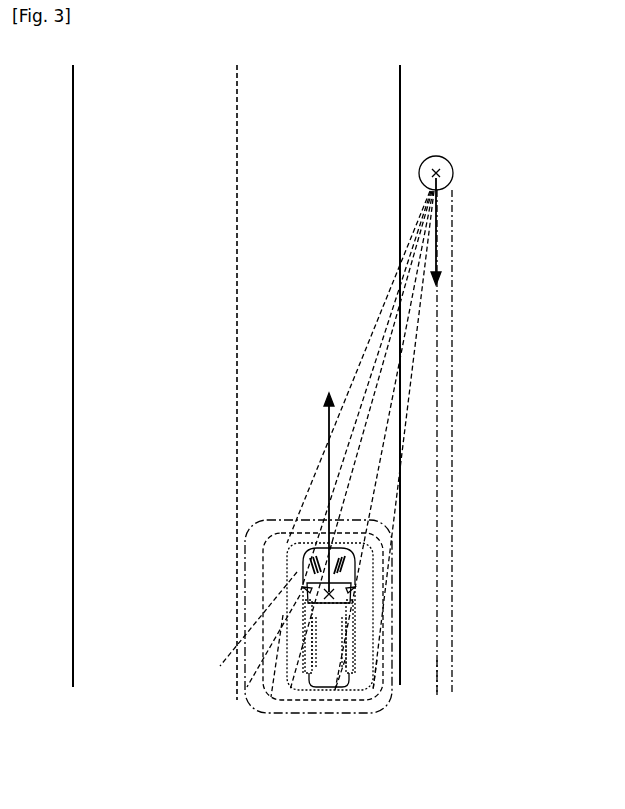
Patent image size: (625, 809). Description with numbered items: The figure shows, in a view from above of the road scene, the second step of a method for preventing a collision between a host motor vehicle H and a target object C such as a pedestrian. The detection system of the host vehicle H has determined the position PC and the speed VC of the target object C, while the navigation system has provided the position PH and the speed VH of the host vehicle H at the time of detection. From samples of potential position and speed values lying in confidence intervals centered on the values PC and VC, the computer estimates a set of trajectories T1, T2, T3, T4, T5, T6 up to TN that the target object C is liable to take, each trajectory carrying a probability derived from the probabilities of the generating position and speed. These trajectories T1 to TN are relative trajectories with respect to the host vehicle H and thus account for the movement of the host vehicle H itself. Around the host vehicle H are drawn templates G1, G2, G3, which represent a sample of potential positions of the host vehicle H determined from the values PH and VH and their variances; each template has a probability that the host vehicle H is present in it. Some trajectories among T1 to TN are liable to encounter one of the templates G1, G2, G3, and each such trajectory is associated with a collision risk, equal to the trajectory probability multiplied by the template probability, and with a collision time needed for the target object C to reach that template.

The target object C is at (448, 161).
The position of the target object PC is at (443, 174).
The speed of the target object VC is at (440, 250).
The speed of the host vehicle VH is at (326, 422).
The position of the host vehicle PH is at (333, 592).
The host motor vehicle H is at (355, 630).
The first template G1 is at (288, 562).
The second template G2 is at (265, 556).
The third template G3 is at (250, 532).
The first trajectory T1 is at (218, 668).
The second trajectory T2 is at (247, 686).
The third trajectory T3 is at (288, 683).
The fourth trajectory T4 is at (333, 687).
The fifth trajectory T5 is at (378, 688).
The sixth trajectory T6 is at (437, 688).
The N-th trajectory TN is at (453, 682).